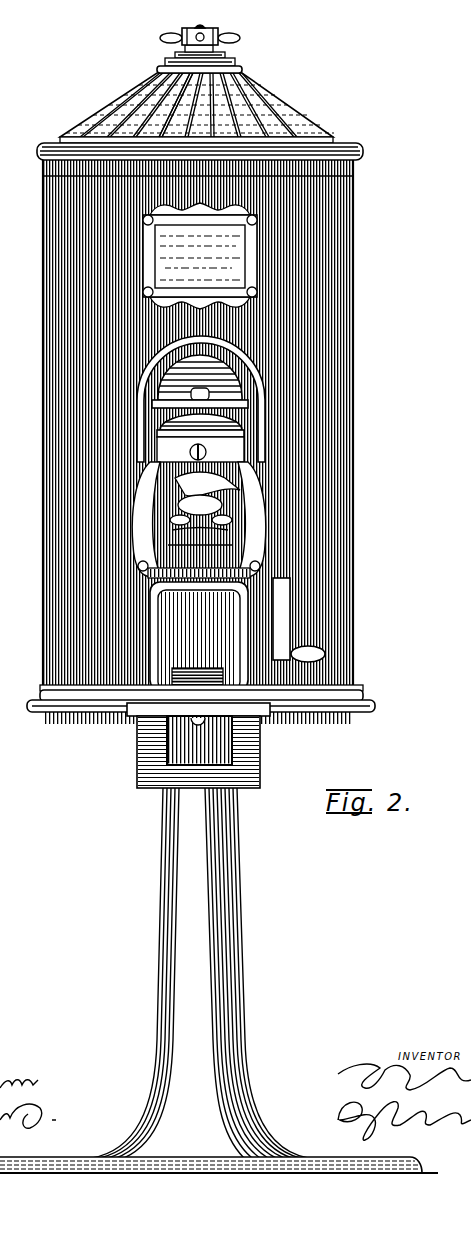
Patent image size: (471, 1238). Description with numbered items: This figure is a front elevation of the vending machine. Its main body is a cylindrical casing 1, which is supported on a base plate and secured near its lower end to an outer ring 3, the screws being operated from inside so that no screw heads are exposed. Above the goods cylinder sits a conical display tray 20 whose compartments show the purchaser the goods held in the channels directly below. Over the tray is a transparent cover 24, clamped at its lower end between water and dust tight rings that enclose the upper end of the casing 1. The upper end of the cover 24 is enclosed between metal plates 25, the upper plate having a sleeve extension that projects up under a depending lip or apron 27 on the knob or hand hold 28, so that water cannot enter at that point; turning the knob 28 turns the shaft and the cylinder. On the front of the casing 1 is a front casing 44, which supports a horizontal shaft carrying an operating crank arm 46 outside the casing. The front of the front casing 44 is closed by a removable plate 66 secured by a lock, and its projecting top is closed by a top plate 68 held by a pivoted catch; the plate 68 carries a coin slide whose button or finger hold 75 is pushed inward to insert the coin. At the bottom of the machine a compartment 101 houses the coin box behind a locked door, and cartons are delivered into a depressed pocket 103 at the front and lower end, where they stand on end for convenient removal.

The cylindrical casing 1 is at (350, 329).
The display tray 20 is at (294, 120).
The transparent cover 24 is at (123, 102).
The metal plates 25 is at (242, 63).
The depending lip or apron 27 is at (183, 47).
The knob or hand hold 28 is at (208, 30).
The top plate 68 is at (168, 399).
The button or finger hold 75 is at (190, 372).
The removable plate 66 is at (200, 449).
The front casing 44 is at (199, 636).
The operating crank arm 46 is at (286, 615).
The outer ring 3 is at (40, 701).
The compartment 101 is at (261, 757).
The depressed pocket 103 is at (165, 742).